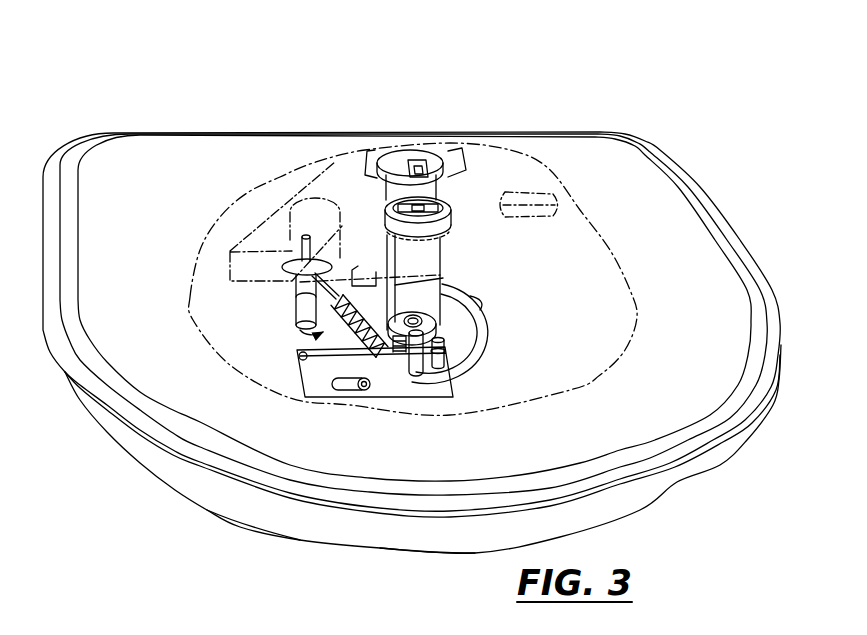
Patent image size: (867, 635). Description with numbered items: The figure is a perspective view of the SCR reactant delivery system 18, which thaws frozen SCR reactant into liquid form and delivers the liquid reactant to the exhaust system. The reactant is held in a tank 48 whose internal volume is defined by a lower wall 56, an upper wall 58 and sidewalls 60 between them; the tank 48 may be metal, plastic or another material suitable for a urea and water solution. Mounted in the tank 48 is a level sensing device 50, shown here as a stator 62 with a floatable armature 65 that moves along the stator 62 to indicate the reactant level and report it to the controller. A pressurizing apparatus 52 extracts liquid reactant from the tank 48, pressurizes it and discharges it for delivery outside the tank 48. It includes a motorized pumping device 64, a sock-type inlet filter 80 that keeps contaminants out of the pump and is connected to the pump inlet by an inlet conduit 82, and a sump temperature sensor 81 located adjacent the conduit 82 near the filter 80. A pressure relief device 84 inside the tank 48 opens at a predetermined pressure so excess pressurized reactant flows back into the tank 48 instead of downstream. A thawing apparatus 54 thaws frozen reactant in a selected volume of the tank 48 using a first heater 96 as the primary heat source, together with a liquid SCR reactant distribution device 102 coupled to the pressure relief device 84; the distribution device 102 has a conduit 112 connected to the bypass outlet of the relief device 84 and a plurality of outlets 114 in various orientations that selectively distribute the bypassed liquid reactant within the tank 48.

The SCR reactant delivery system 18 is at (287, 556).
The tank 48 is at (702, 185).
The level sensing device 50 is at (373, 188).
The pressurizing apparatus 52 is at (317, 237).
The thawing apparatus 54 is at (380, 296).
The lower wall 56 is at (475, 553).
The upper wall 58 is at (478, 163).
The sidewalls 60 is at (678, 480).
The stator 62 is at (388, 245).
The motorized pumping device 64 is at (447, 257).
The floatable armature 65 is at (443, 276).
The inlet filter 80 is at (288, 389).
The sump temperature sensor 81 is at (440, 353).
The inlet conduit 82 is at (427, 373).
The pressure relief device 84 is at (277, 285).
The first heater 96 is at (298, 352).
The liquid SCR reactant distribution device 102 is at (470, 377).
The conduit 112 is at (487, 334).
The outlets 114 is at (358, 266).